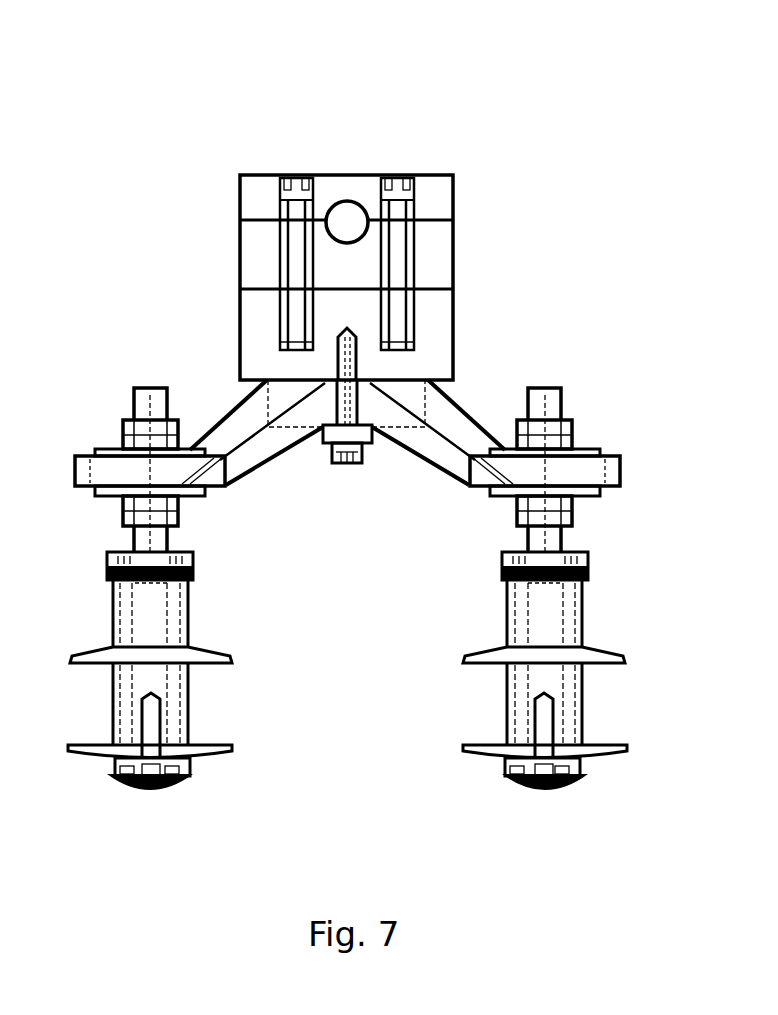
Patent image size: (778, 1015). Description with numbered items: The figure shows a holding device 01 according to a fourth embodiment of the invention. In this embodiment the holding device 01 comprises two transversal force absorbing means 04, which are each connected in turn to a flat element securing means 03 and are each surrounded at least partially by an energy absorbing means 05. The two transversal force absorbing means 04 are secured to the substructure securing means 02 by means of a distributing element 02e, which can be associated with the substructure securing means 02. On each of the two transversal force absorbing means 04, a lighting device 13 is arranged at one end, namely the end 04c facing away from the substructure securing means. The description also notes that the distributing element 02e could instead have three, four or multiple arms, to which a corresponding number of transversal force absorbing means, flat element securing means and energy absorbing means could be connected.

The holding device 01 is at (505, 100).
The substructure securing means 02 is at (482, 265).
The distributing element 02e is at (243, 414).
The flat element securing means 03 is at (482, 708).
The transversal force absorbing means 04 is at (148, 403).
The end of the transversal force absorbing means 04c is at (504, 760).
The energy absorbing means 05 is at (503, 610).
The lighting device 13 is at (513, 793).